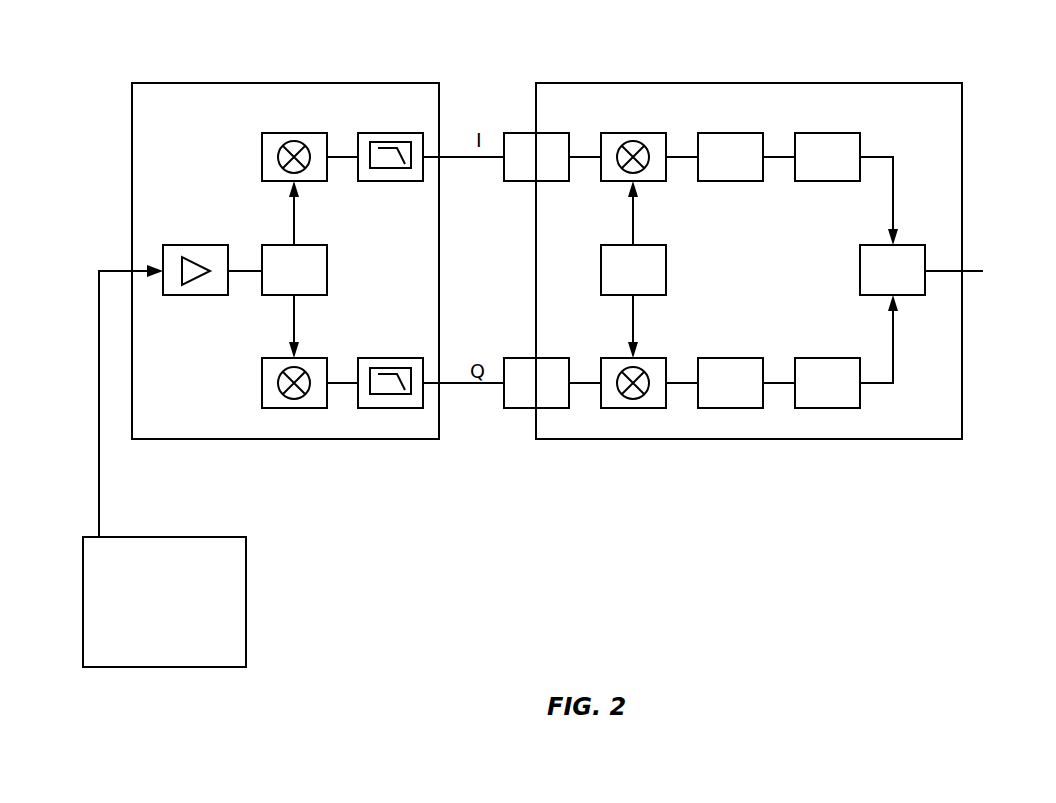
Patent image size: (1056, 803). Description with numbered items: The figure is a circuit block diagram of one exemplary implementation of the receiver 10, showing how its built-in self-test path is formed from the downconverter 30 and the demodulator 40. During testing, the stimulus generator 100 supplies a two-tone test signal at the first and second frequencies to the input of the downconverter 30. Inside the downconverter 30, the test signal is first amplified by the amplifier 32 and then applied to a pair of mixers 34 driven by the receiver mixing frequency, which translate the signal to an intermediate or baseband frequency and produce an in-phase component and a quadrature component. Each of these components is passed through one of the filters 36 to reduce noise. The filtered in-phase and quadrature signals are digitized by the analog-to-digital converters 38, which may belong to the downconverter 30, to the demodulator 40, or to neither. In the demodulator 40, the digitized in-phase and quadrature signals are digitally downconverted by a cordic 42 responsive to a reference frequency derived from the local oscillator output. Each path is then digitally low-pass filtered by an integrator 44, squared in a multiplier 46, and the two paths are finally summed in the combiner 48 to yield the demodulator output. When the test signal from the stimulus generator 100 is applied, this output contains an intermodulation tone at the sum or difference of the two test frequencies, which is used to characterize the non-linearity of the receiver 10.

The receiver 10 is at (720, 591).
The downconverter 30 is at (364, 83).
The amplifier 32 is at (195, 245).
The mixers 34 is at (292, 133).
The filters 36 is at (384, 133).
The analog-to-digital converters 38 is at (548, 133).
The demodulator 40 is at (866, 83).
The cordic 42 is at (643, 133).
The integrator 44 is at (743, 133).
The multiplier 46 is at (838, 133).
The combiner 48 is at (908, 245).
The stimulus generator 100 is at (164, 466).